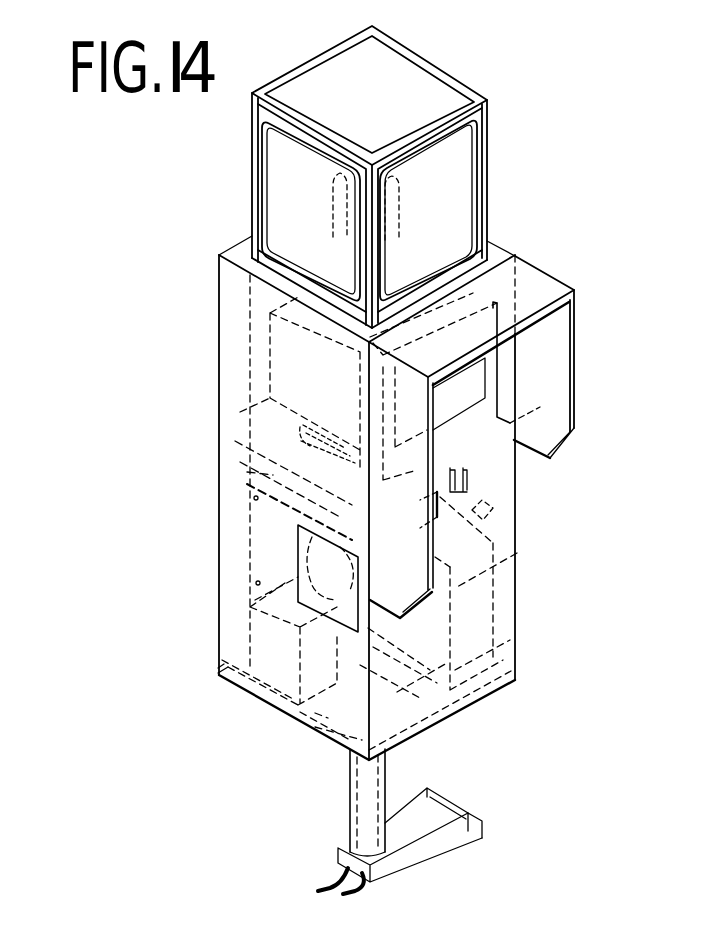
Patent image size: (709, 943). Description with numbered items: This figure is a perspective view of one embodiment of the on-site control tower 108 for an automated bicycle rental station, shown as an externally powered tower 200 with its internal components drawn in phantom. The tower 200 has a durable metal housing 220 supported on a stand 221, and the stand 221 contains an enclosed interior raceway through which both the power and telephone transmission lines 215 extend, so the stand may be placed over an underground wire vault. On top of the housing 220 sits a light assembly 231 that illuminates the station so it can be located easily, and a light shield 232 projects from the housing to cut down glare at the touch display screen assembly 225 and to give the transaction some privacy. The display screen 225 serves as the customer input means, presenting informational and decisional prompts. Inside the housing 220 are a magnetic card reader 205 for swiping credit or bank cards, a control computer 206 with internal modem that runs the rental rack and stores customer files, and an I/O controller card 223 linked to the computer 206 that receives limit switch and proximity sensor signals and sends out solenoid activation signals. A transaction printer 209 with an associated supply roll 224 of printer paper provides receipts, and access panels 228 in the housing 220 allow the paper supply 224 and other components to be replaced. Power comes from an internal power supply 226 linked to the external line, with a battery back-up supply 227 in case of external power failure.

The control tower 108 is at (238, 168).
The light assembly 231 is at (496, 200).
The externally powered control tower embodiment 200 is at (200, 266).
The housing 220 is at (218, 503).
The light shield 232 is at (576, 333).
The touch display screen assembly 225 is at (468, 385).
The I/O controller card 223 is at (478, 481).
The magnetic card reader 205 is at (440, 500).
The transaction printer 209 is at (515, 556).
The control computer 206 is at (515, 600).
The supply roll of printer paper 224 is at (247, 479).
The access panel 228 is at (305, 573).
The internal power supply 226 is at (265, 630).
The battery back-up supply 227 is at (296, 706).
The stand 221 is at (367, 787).
The power and telephone transmission lines 215 is at (342, 880).